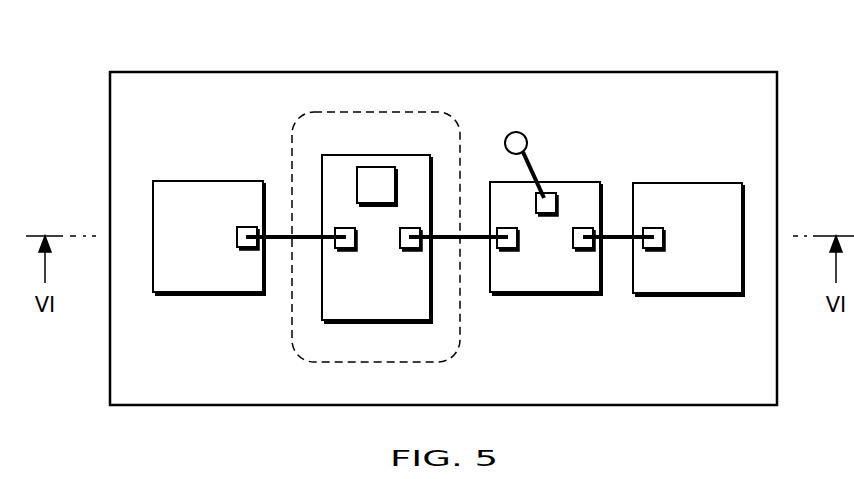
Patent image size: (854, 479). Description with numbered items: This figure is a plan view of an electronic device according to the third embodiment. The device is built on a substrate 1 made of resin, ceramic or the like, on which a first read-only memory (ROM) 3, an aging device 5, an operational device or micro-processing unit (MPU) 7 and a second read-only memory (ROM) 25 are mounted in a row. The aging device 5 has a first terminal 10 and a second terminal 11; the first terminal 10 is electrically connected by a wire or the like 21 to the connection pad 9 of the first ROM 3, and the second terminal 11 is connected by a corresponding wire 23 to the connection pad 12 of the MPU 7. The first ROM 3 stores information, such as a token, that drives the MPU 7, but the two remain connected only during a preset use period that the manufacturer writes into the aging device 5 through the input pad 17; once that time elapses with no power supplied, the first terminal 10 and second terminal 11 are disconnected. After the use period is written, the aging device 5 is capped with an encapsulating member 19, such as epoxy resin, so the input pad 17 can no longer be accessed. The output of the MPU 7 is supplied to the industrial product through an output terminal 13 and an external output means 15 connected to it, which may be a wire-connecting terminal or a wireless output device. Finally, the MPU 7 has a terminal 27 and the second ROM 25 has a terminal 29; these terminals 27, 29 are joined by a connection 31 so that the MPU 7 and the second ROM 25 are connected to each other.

The substrate 1 is at (765, 382).
The first read-only memory (ROM) 3 is at (215, 278).
The aging device 5 is at (373, 308).
The operational device or micro-processing unit (MPU) 7 is at (578, 284).
The connection pad 9 is at (246, 226).
The first terminal 10 is at (346, 249).
The second terminal 11 is at (404, 249).
The connection pad 12 is at (509, 249).
The output terminal 13 is at (545, 214).
The external output means 15 is at (522, 135).
The input pad 17 is at (375, 178).
The encapsulating member 19 is at (416, 111).
The first cable 21 is at (275, 249).
The second cable 23 is at (473, 249).
The second read-only memory (ROM) 25 is at (695, 282).
The terminal 27 is at (583, 226).
The terminal 29 is at (654, 226).
The third cable 31 is at (619, 234).